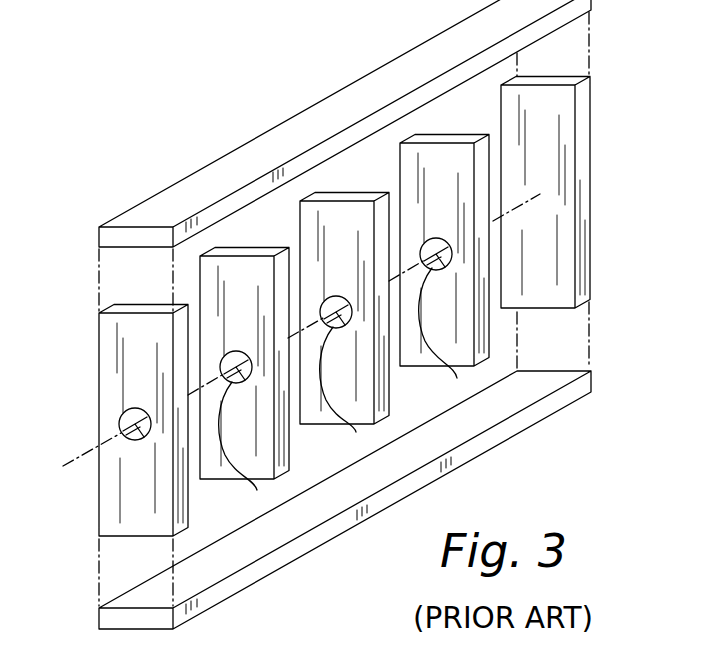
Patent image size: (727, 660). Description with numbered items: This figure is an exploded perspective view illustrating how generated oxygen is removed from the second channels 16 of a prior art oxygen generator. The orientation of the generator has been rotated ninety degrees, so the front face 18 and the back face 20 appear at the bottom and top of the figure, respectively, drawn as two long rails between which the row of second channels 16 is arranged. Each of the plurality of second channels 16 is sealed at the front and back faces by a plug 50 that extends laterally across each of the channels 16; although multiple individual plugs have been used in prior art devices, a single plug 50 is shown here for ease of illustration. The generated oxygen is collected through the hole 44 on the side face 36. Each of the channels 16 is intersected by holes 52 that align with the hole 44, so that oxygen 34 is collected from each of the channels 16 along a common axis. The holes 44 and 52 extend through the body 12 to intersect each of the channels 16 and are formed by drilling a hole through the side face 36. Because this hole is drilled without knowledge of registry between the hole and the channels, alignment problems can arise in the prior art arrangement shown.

The body 12 is at (605, 213).
The second channels 16 is at (73, 291).
The front face 18 is at (592, 417).
The back face 20 is at (311, 92).
The oxygen 34 is at (67, 461).
The side face 36 is at (110, 487).
The hole 44 is at (124, 419).
The plug 50 is at (245, 160).
The holes 52 is at (257, 490).